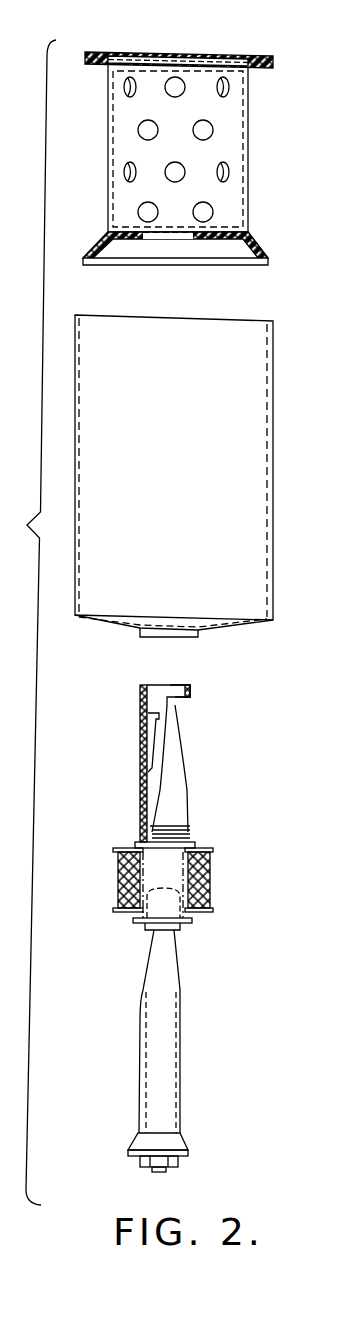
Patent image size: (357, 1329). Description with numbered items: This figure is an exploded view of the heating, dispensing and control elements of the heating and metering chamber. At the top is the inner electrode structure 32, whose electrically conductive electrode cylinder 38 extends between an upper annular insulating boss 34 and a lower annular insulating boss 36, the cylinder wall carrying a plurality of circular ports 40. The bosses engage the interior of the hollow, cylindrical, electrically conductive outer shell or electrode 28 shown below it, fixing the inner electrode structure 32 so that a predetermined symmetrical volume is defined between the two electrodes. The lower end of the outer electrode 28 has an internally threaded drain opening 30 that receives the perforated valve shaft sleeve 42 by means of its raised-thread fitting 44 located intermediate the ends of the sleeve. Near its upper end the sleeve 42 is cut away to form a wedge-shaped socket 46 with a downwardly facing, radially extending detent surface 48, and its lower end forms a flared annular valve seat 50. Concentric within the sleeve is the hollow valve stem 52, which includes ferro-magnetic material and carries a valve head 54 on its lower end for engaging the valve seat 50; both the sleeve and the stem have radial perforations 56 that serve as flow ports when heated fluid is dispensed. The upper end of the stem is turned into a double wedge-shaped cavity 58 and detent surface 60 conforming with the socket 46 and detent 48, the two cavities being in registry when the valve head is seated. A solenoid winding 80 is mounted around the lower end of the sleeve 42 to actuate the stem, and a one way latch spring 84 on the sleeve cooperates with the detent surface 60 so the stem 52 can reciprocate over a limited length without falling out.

The outer shell or electrode 28 is at (280, 445).
The drain opening 30 is at (200, 631).
The inner electrode structure 32 is at (92, 140).
The upper annular insulating boss 34 is at (258, 58).
The lower annular insulating boss 36 is at (258, 250).
The electrode cylinder 38 is at (249, 158).
The circular ports 40 is at (216, 95).
The valve shaft sleeve 42 is at (143, 770).
The raised-thread fitting 44 is at (191, 832).
The socket 46 is at (174, 708).
The detent surface 48 is at (178, 700).
The annular valve seat 50 is at (141, 924).
The valve stem 52 is at (181, 1022).
The valve head 54 is at (183, 1146).
The radial perforations 56 is at (143, 748).
The double wedge-shaped cavity 58 is at (180, 957).
The detent surface 60 is at (165, 928).
The solenoid winding 80 is at (214, 880).
The one way latch spring 84 is at (143, 716).